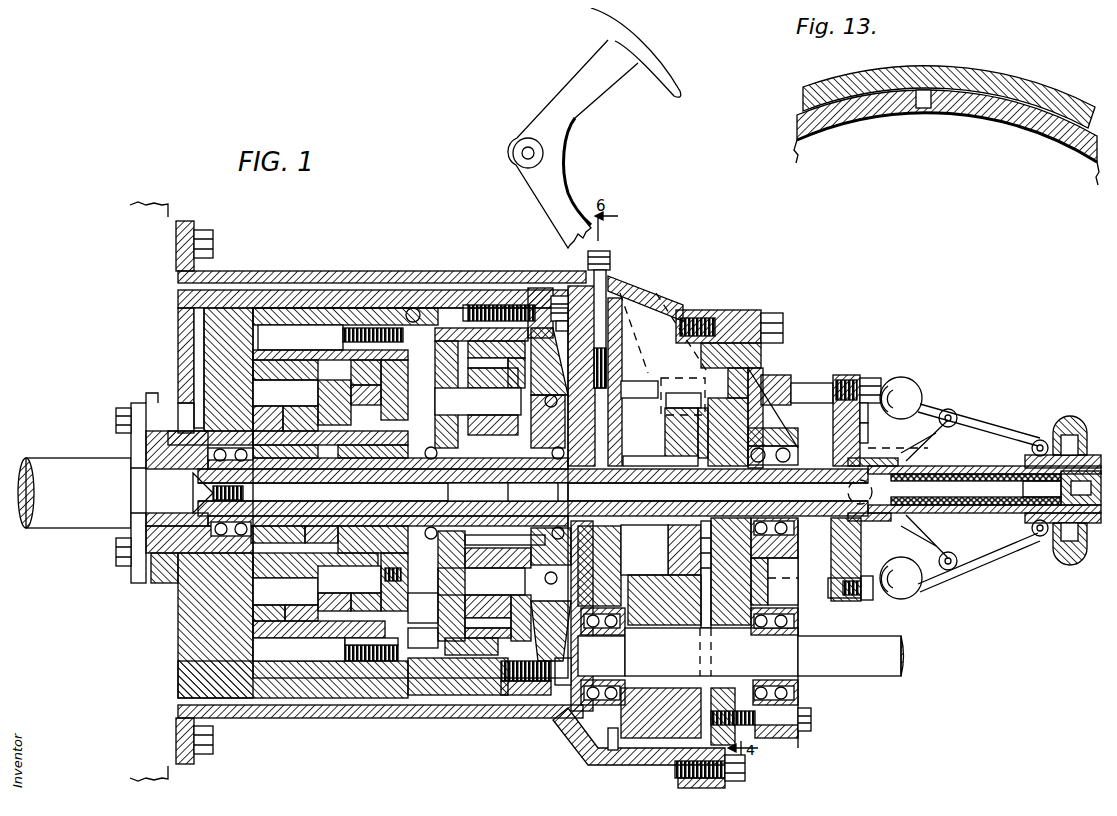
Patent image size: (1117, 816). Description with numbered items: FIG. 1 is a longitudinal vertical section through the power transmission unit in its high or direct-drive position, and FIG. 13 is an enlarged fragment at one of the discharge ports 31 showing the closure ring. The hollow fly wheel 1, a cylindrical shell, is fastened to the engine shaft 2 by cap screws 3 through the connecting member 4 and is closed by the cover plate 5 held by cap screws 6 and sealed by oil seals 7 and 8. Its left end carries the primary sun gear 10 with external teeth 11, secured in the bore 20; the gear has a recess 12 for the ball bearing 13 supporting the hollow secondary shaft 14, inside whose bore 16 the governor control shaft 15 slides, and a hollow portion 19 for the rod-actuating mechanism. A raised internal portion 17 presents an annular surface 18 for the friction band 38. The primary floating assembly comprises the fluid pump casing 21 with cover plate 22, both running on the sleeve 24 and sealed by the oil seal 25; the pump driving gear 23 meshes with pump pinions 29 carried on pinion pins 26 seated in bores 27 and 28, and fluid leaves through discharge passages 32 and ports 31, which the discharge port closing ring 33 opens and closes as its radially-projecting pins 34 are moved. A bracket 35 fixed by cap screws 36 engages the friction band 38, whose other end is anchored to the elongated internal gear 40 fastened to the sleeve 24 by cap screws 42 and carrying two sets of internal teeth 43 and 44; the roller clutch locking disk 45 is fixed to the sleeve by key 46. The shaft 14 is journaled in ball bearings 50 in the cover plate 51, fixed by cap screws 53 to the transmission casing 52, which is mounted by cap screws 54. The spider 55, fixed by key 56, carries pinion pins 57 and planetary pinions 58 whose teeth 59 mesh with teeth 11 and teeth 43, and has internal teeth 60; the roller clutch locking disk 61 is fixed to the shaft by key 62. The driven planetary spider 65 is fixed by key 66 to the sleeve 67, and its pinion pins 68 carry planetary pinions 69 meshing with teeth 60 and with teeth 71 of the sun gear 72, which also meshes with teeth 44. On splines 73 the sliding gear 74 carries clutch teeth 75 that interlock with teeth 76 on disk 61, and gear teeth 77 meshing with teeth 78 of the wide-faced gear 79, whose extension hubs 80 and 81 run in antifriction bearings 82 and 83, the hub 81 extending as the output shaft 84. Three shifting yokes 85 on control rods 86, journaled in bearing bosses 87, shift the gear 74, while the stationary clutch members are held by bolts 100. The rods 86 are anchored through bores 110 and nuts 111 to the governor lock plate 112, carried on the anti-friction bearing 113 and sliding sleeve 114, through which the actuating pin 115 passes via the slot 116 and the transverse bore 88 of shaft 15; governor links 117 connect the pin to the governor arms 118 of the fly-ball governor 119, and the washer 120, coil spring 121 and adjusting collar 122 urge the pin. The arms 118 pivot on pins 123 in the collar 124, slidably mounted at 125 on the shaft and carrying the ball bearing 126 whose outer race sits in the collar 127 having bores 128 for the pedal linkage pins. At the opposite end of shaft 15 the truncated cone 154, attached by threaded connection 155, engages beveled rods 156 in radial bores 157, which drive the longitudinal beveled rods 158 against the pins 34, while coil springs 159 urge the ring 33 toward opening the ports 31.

In FIG. 1, the hollow fly wheel 1 is at (170, 652).
In FIG. 1, the engine shaft 2 is at (78, 455).
In FIG. 1, the cap screws 3 is at (108, 405).
In FIG. 1, the connecting member 4 is at (123, 440).
In FIG. 1, the cover plate 5 is at (515, 300).
In FIG. 1, the cap screws 6 is at (560, 705).
In FIG. 1, the oil seal 7 is at (710, 285).
In FIG. 1, the oil seal 8 is at (551, 494).
In FIG. 1, the primary sun gear 10 is at (174, 530).
In FIG. 1, the external teeth 11 is at (245, 400).
In FIG. 1, the recess 12 is at (205, 548).
In FIG. 1, the ball bearing 13 is at (140, 535).
In FIG. 1, the secondary shaft 14 is at (649, 491).
In FIG. 1, the governor control shaft 15 is at (533, 491).
In FIG. 1, the bore 16 is at (578, 768).
In FIG. 1, the raised internal portion 17 is at (400, 690).
In FIG. 1, the internal annular surface 18 is at (355, 653).
In FIG. 1, the hollow portion 19 is at (138, 470).
In FIG. 1, the bore 20 is at (140, 400).
In FIG. 1, the fluid pump casing 21 is at (468, 297).
In FIG. 13, the fluid pump casing 21 is at (998, 115).
In FIG. 1, the pump casing cover plate 22 is at (565, 325).
In FIG. 1, the pump driving gear 23 is at (493, 415).
In FIG. 1, the sleeve 24 is at (493, 405).
In FIG. 1, the oil seal 25 is at (459, 650).
In FIG. 1, the pinion pins 26 is at (481, 495).
In FIG. 1, the bores 27 is at (478, 401).
In FIG. 1, the bores 28 is at (570, 345).
In FIG. 1, the pump pinions 29 is at (498, 611).
In FIG. 1, the discharge ports 31 is at (510, 300).
In FIG. 13, the discharge ports 31 is at (914, 101).
In FIG. 1, the discharge passages 32 is at (472, 716).
In FIG. 1, the discharge port closing ring 33 is at (440, 650).
In FIG. 13, the discharge port closing ring 33 is at (847, 80).
In FIG. 1, the radially-projecting pins 34 is at (490, 297).
In FIG. 1, the bracket 35 is at (410, 320).
In FIG. 1, the cap screws 36 is at (430, 330).
In FIG. 1, the friction band 38 is at (348, 260).
In FIG. 1, the internal gear 40 is at (370, 320).
In FIG. 1, the cap screws 42 is at (422, 608).
In FIG. 1, the internal gear teeth 43 is at (245, 580).
In FIG. 1, the internal gear teeth 44 is at (360, 420).
In FIG. 1, the roller clutch locking disk 45 is at (639, 389).
In FIG. 1, the key 46 is at (612, 440).
In FIG. 1, the ball bearings 50 is at (780, 445).
In FIG. 1, the cover plate 51 is at (784, 430).
In FIG. 1, the transmission casing 52 is at (690, 300).
In FIG. 1, the cap screws 53 is at (768, 310).
In FIG. 1, the cap screws 54 is at (196, 225).
In FIG. 1, the spider 55 is at (290, 365).
In FIG. 1, the key 56 is at (330, 454).
In FIG. 1, the pinion pins 57 is at (330, 472).
In FIG. 1, the planetary pinions 58 is at (319, 619).
In FIG. 1, the teeth 59 is at (285, 384).
In FIG. 1, the internal teeth 60 is at (322, 720).
In FIG. 1, the roller clutch locking disk 61 is at (750, 555).
In FIG. 1, the key 62 is at (770, 400).
In FIG. 1, the planetary spider 65 is at (334, 402).
In FIG. 1, the key 66 is at (330, 473).
In FIG. 1, the sleeve 67 is at (508, 491).
In FIG. 1, the pinion pins 68 is at (349, 587).
In FIG. 1, the planetary pinions 69 is at (358, 593).
In FIG. 1, the teeth 71 is at (379, 390).
In FIG. 1, the sun gear 72 is at (383, 582).
In FIG. 1, the splines 73 is at (678, 433).
In FIG. 1, the sliding gear 74 is at (657, 420).
In FIG. 1, the clutch teeth 75 is at (728, 422).
In FIG. 1, the teeth 76 is at (728, 395).
In FIG. 1, the gear teeth 77 is at (683, 395).
In FIG. 1, the teeth 78 is at (644, 550).
In FIG. 1, the wide-faced gear 79 is at (645, 600).
In FIG. 1, the extension hub 80 is at (601, 656).
In FIG. 1, the extension hub 81 is at (725, 665).
In FIG. 1, the antifriction bearing 82 is at (600, 678).
In FIG. 1, the antifriction bearing 83 is at (780, 685).
In FIG. 1, the output shaft 84 is at (895, 650).
In FIG. 1, the shifting yokes 85 is at (680, 380).
In FIG. 1, the control rods 86 is at (805, 378).
In FIG. 1, the bearing bosses 87 is at (775, 370).
In FIG. 1, the transverse bore 88 is at (875, 515).
In FIG. 1, the bolts 100 is at (605, 265).
In FIG. 1, the bores 110 is at (852, 409).
In FIG. 1, the nuts 111 is at (865, 372).
In FIG. 1, the governor lock plate 112 is at (877, 416).
In FIG. 1, the anti-friction bearing 113 is at (878, 434).
In FIG. 1, the sliding sleeve 114 is at (916, 483).
In FIG. 1, the actuating pin 115 is at (888, 481).
In FIG. 1, the slot 116 is at (842, 486).
In FIG. 1, the governor links 117 is at (943, 489).
In FIG. 1, the governor arms 118 is at (970, 425).
In FIG. 1, the fly-ball governor 119 is at (900, 385).
In FIG. 1, the washer 120 is at (888, 484).
In FIG. 1, the coil spring 121 is at (985, 461).
In FIG. 1, the adjusting collar 122 is at (1075, 537).
In FIG. 1, the pins 123 is at (1030, 432).
In FIG. 1, the collar 124 is at (1018, 447).
In FIG. 1, the sliding mount 125 is at (1027, 488).
In FIG. 1, the ball bearing 126 is at (1070, 420).
In FIG. 1, the collar 127 is at (1055, 410).
In FIG. 1, the bores 128 is at (1081, 488).
In FIG. 1, the truncated cone 154 is at (192, 478).
In FIG. 1, the threaded connection 155 is at (236, 485).
In FIG. 1, the beveled rods 156 is at (188, 318).
In FIG. 1, the radial bores 157 is at (172, 333).
In FIG. 1, the longitudinal beveled rods 158 is at (237, 300).
In FIG. 1, the coil springs 159 is at (505, 300).